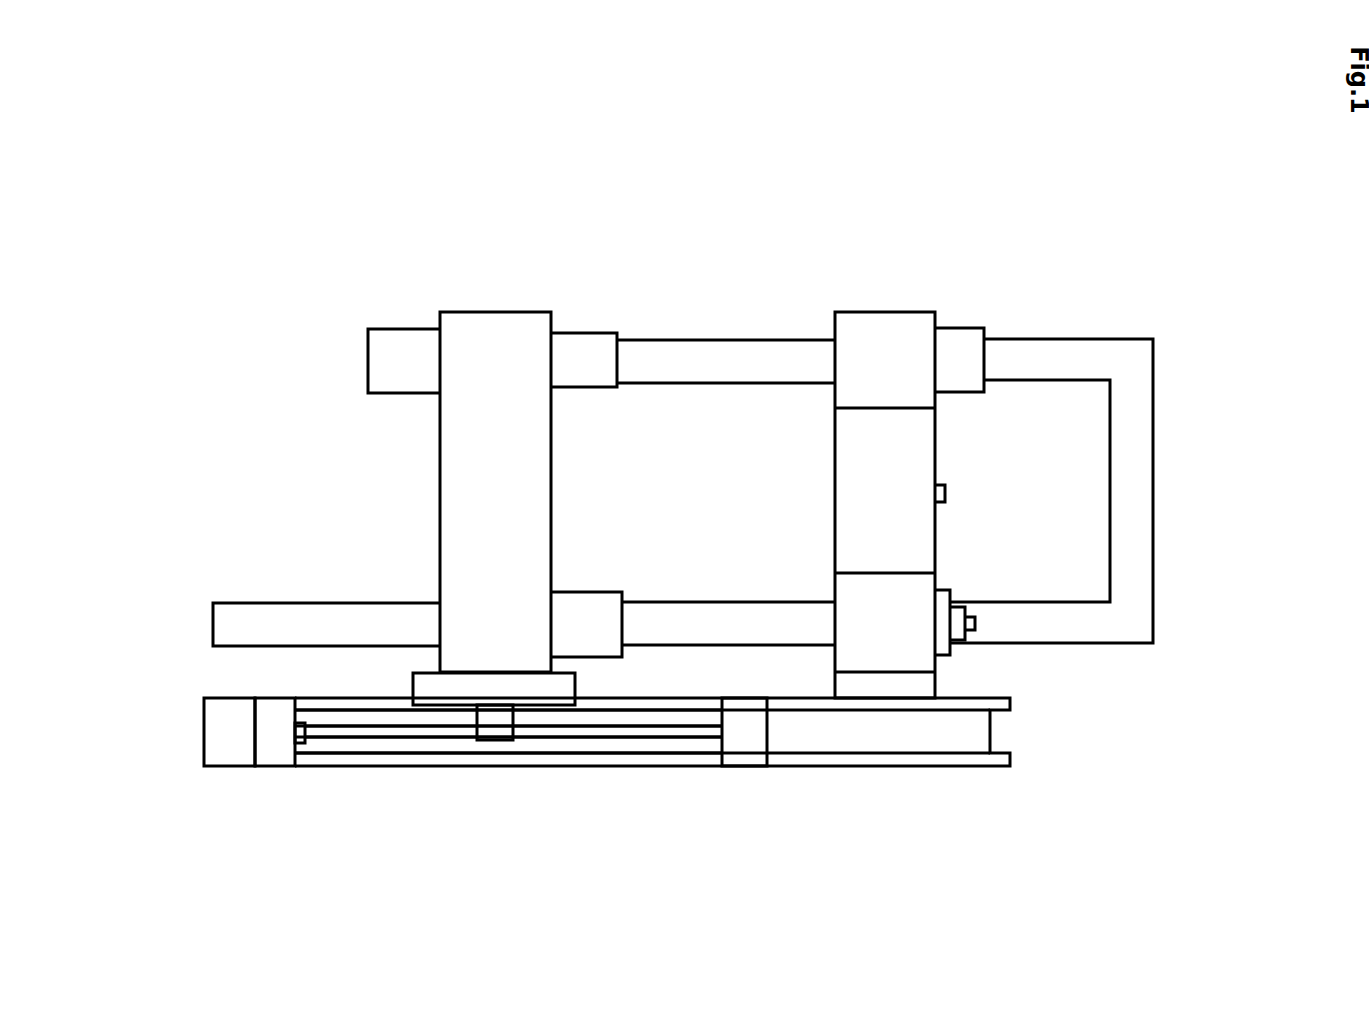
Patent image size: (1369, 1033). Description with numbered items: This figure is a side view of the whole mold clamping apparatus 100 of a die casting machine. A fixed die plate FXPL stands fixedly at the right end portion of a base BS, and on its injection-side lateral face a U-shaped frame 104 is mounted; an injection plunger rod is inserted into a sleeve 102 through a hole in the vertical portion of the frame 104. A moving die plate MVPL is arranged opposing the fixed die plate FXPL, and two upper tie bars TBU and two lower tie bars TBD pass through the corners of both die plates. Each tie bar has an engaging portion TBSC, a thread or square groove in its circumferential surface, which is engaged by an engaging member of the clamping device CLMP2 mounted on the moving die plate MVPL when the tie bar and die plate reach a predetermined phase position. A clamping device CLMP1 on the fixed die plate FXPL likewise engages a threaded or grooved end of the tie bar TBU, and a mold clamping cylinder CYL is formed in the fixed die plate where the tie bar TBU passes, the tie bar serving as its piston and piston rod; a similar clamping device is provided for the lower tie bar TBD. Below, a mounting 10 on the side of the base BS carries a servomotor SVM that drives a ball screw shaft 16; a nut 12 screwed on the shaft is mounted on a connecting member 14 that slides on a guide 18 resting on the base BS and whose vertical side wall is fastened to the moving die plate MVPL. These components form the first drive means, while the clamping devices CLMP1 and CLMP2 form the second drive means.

The mold clamping apparatus 100 is at (178, 376).
The mounting 10 is at (275, 752).
The nut 12 is at (494, 733).
The connecting member 14 is at (420, 690).
The ball screw shaft 16 is at (423, 732).
The guide 18 is at (300, 703).
The sleeve 102 is at (948, 492).
The U-shaped frame 104 is at (1140, 488).
The base BS is at (1018, 727).
The servomotor SVM is at (228, 750).
The moving die plate MVPL is at (495, 290).
The fixed die plate FXPL is at (857, 283).
The clamping device CLMP1 is at (963, 335).
The clamping device CLMP2 is at (402, 340).
The upper tie bar TBU is at (680, 340).
The lower tie bar TBD is at (224, 629).
The engaging portion TBSC is at (583, 340).
The mold clamping cylinder CYL is at (890, 320).